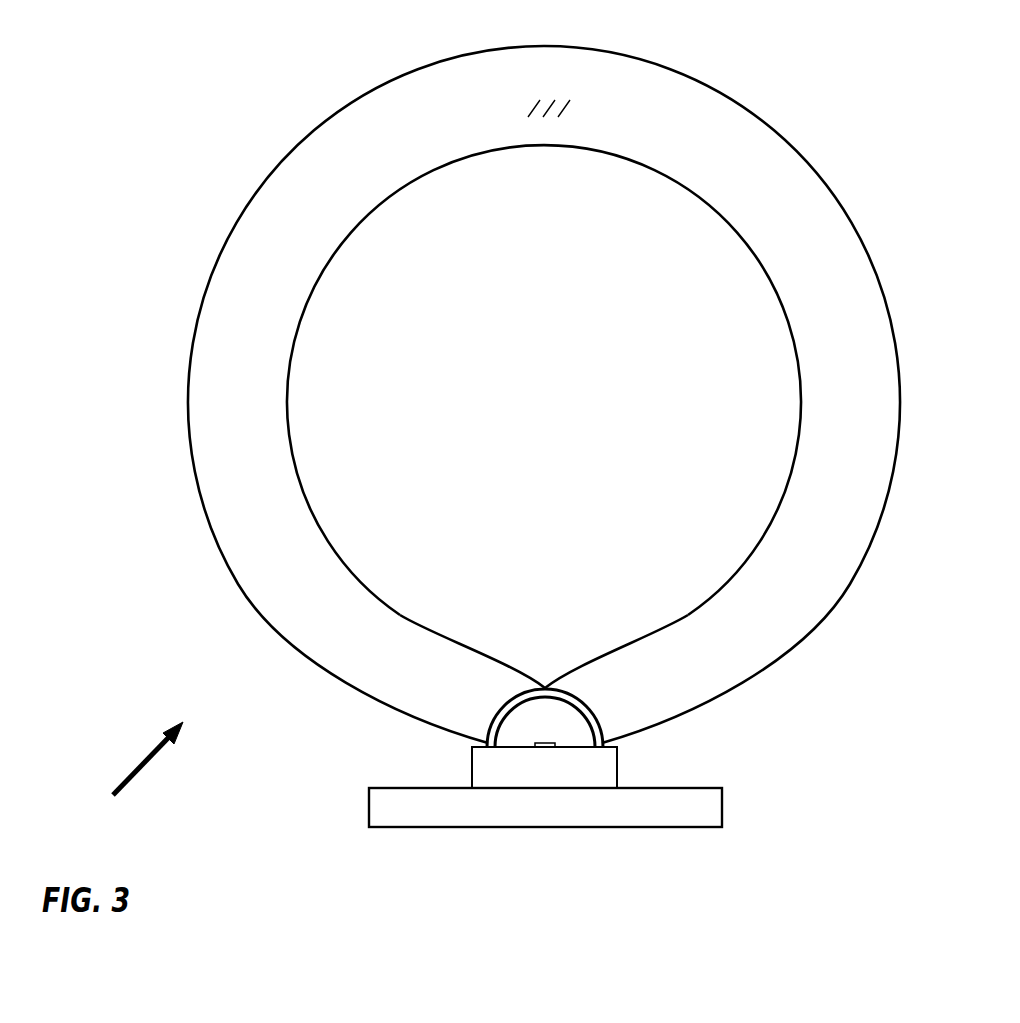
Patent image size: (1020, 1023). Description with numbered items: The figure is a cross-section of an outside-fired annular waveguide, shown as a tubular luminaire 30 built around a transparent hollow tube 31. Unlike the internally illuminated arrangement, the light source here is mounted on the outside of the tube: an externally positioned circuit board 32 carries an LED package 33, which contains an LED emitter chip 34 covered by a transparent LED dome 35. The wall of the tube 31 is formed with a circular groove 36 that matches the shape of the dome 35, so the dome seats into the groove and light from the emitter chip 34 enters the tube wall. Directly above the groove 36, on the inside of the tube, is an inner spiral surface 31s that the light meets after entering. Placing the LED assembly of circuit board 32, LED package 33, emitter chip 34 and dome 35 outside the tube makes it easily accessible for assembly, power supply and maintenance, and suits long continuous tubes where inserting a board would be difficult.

The tubular luminaire 30 is at (135, 772).
The transparent hollow tube 31 is at (328, 183).
The inner spiral surface 31s is at (503, 645).
The circuit board 32 is at (545, 808).
The LED package 33 is at (575, 772).
The LED emitter chip 34 is at (542, 747).
The transparent LED dome 35 is at (548, 717).
The circular groove 36 is at (598, 716).